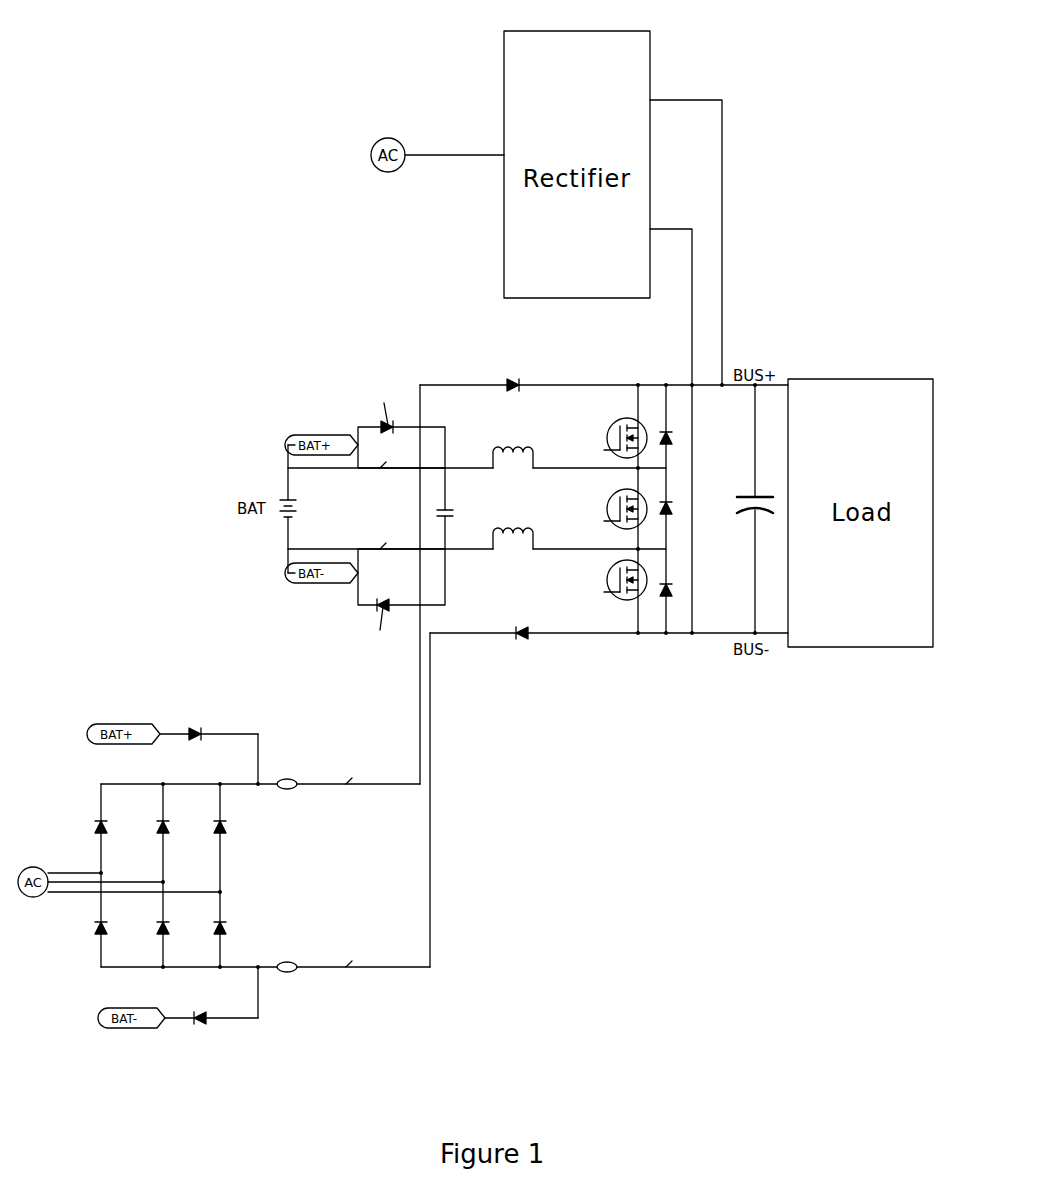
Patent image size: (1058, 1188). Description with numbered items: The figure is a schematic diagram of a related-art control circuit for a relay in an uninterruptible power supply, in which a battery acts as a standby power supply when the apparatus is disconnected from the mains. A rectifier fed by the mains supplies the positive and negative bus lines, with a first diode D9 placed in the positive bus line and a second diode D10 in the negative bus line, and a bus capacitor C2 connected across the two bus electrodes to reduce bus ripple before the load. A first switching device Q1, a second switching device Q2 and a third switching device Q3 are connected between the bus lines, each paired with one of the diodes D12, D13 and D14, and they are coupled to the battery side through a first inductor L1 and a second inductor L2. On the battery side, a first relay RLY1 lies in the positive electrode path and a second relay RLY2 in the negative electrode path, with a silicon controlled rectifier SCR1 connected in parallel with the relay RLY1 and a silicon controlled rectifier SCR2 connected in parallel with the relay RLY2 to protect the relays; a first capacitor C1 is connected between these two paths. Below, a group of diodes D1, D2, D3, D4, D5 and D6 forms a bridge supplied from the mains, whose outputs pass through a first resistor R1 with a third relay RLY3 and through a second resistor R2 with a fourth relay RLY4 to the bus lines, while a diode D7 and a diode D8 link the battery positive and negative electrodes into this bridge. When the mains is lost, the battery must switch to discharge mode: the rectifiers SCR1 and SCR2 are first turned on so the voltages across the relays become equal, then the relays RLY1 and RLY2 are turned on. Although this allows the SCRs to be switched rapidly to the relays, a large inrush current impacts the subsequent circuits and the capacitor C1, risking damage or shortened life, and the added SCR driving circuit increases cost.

The diode D1 is at (113, 828).
The diode D2 is at (113, 929).
The diode D3 is at (175, 828).
The diode D4 is at (175, 929).
The diode D5 is at (232, 828).
The diode D6 is at (232, 929).
The diode D7 is at (194, 748).
The diode D8 is at (199, 1007).
The first diode D9 is at (512, 398).
The second diode D10 is at (522, 623).
The diode D12 is at (682, 434).
The diode D13 is at (682, 504).
The diode D14 is at (682, 586).
The first switching device Q1 is at (613, 438).
The second switching device Q2 is at (613, 509).
The third switching device Q3 is at (613, 580).
The first capacitor C1 is at (456, 508).
The bus capacitor C2 is at (744, 509).
The first inductor L1 is at (499, 459).
The second inductor L2 is at (499, 540).
The first resistor R1 is at (287, 795).
The second resistor R2 is at (287, 978).
The silicon controlled rectifier SCR1 is at (401, 435).
The silicon controlled rectifier SCR2 is at (387, 605).
The first relay RLY1 is at (390, 478).
The second relay RLY2 is at (390, 574).
The third relay RLY3 is at (358, 794).
The fourth relay RLY4 is at (363, 977).